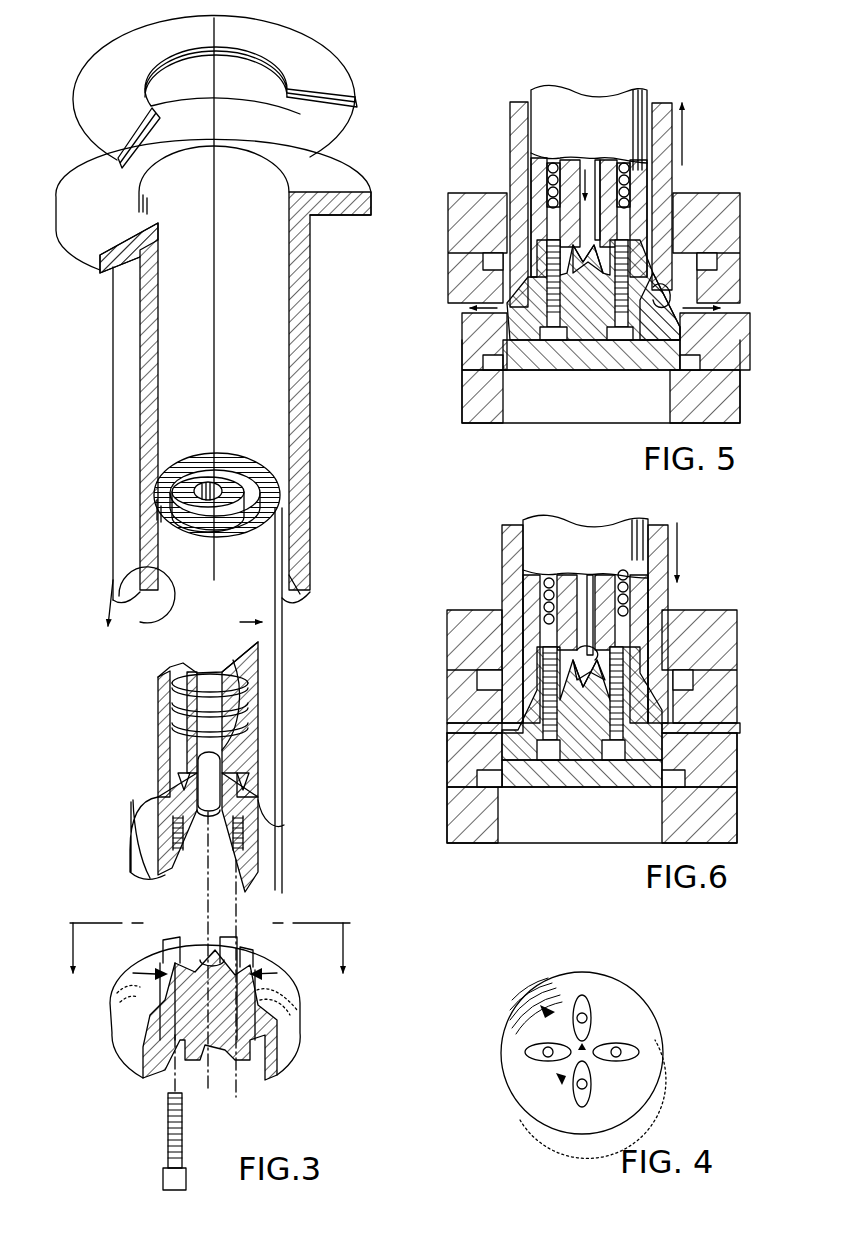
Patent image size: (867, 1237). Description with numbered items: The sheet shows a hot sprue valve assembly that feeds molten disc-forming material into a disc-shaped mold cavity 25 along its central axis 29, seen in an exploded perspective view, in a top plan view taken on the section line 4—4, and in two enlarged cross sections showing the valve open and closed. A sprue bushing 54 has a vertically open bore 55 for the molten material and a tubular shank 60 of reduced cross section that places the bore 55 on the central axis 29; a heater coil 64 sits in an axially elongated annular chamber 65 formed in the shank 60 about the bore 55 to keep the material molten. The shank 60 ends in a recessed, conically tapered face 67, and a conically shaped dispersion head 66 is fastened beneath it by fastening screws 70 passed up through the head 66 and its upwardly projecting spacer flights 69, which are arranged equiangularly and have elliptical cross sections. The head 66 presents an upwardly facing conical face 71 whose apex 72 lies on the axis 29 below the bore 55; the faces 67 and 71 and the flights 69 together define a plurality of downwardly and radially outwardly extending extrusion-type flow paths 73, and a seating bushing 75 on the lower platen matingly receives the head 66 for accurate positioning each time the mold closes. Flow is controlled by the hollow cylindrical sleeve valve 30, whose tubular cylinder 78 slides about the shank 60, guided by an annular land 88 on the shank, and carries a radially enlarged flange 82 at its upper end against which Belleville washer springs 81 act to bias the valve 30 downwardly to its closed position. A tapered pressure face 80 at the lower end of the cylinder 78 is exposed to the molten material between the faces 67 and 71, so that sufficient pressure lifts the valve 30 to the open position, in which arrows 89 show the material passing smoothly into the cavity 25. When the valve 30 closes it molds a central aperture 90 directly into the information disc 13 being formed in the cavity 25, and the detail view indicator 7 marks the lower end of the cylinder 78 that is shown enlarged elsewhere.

In FIG. 6, the information disc 13 is at (500, 727).
In FIG. 3, the mold cavity 25 is at (437, 318).
In FIG. 5, the mold cavity 25 is at (452, 330).
In FIG. 3, the central axis 29 is at (213, 282).
In FIG. 3, the sleeve valve 30 is at (320, 328).
In FIG. 5, the sleeve valve 30 is at (674, 184).
In FIG. 6, the sleeve valve 30 is at (677, 598).
In FIG. 3, the sprue bushing 54 is at (282, 665).
In FIG. 5, the sprue bushing 54 is at (650, 88).
In FIG. 6, the sprue bushing 54 is at (540, 510).
In FIG. 3, the bore 55 is at (205, 780).
In FIG. 5, the bore 55 is at (595, 163).
In FIG. 6, the bore 55 is at (592, 580).
In FIG. 3, the tubular shank 60 is at (258, 530).
In FIG. 5, the tubular shank 60 is at (650, 100).
In FIG. 3, the heater coil 64 is at (182, 700).
In FIG. 5, the heater coil 64 is at (552, 163).
In FIG. 6, the heater coil 64 is at (548, 578).
In FIG. 3, the annular chamber 65 is at (177, 468).
In FIG. 3, the dispersion head 66 is at (306, 1057).
In FIG. 5, the dispersion head 66 is at (528, 342).
In FIG. 6, the dispersion head 66 is at (560, 765).
In FIG. 4, the dispersion head 66 is at (507, 1098).
In FIG. 3, the conically tapered face 67 is at (165, 882).
In FIG. 6, the conically tapered face 67 is at (590, 652).
In FIG. 3, the spacer flights 69 is at (246, 948).
In FIG. 5, the spacer flights 69 is at (655, 290).
In FIG. 4, the spacer flights 69 is at (592, 1005).
In FIG. 3, the fastening screws 70 is at (170, 1115).
In FIG. 5, the fastening screws 70 is at (618, 342).
In FIG. 6, the fastening screws 70 is at (581, 703).
In FIG. 3, the conical face 71 is at (133, 1015).
In FIG. 5, the conical face 71 is at (653, 335).
In FIG. 4, the conical face 71 is at (635, 1022).
In FIG. 3, the apex 72 is at (214, 948).
In FIG. 4, the apex 72 is at (575, 1046).
In FIG. 3, the flow paths 73 is at (262, 972).
In FIG. 4, the flow paths 73 is at (550, 1008).
In FIG. 5, the seating bushing 75 is at (560, 362).
In FIG. 6, the seating bushing 75 is at (625, 778).
In FIG. 3, the tubular cylinder 78 is at (300, 402).
In FIG. 3, the pressure face 80 is at (293, 592).
In FIG. 3, the springs 81 is at (335, 95).
In FIG. 3, the flange 82 is at (333, 157).
In FIG. 3, the annular land 88 is at (283, 820).
In FIG. 5, the arrows 89 is at (595, 212).
In FIG. 6, the central aperture 90 is at (510, 735).
In FIG. 3, the line 4— 4 is at (207, 947).
In FIG. 3, the detail view indicator 7 is at (136, 650).